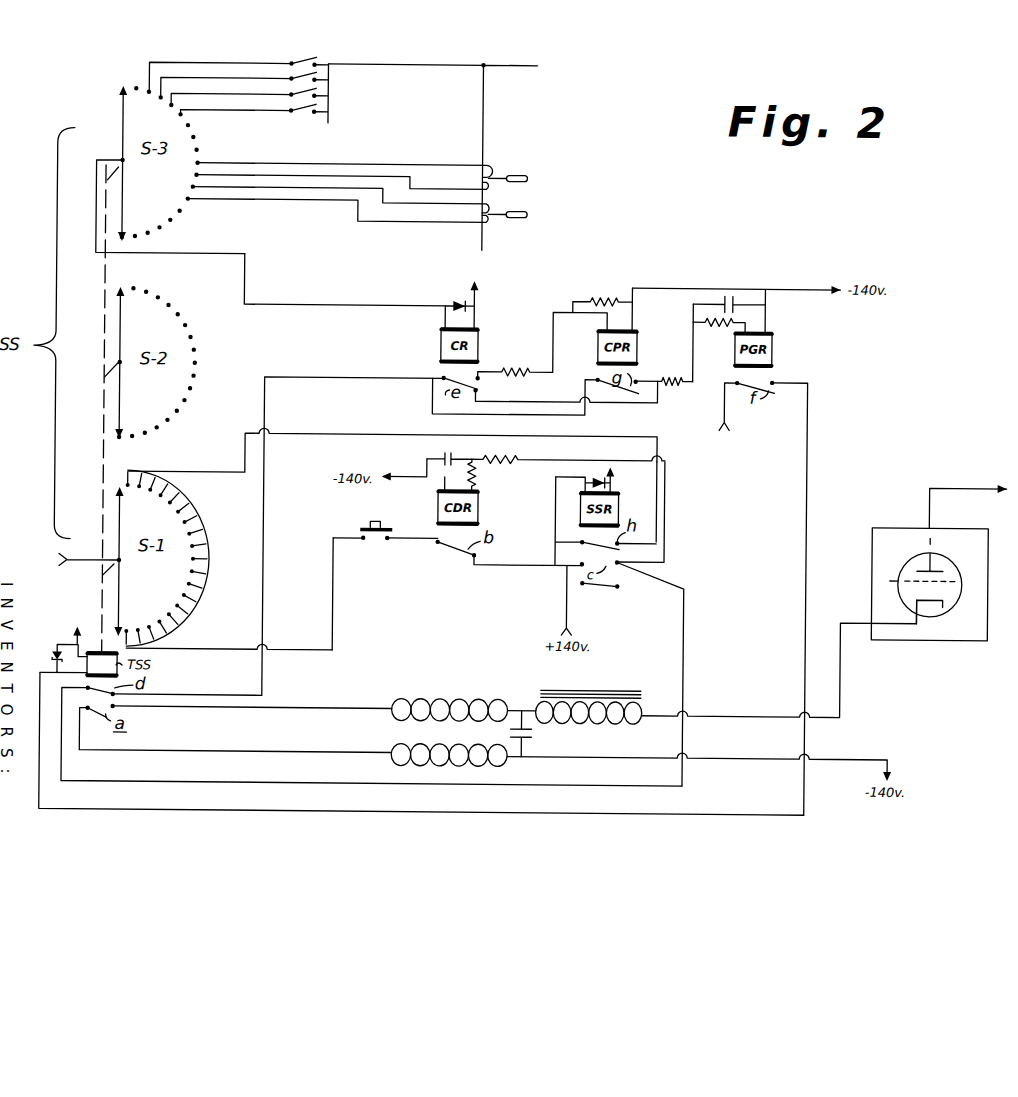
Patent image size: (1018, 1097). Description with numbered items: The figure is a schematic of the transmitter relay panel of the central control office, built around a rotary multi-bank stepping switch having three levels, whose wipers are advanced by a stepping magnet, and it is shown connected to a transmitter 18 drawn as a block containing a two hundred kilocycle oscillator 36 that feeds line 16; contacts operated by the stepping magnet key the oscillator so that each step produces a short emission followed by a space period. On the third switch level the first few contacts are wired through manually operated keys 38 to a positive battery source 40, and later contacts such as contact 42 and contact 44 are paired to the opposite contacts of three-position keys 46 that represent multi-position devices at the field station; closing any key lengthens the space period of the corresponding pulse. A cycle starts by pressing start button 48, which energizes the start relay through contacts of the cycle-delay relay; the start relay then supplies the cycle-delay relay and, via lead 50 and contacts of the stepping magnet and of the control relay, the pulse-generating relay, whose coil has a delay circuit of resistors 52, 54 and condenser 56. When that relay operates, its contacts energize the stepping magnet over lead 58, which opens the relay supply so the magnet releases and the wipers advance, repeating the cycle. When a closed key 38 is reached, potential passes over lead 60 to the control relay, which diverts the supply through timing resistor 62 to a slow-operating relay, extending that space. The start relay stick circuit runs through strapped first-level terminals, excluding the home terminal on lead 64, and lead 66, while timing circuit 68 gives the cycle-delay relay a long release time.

The line 16 is at (949, 490).
The transmitter 18 is at (913, 524).
The oscillator 36 is at (956, 564).
The keys 38 is at (296, 60).
The source of potential 40 is at (534, 65).
The contact 42 is at (195, 165).
The contact 44 is at (192, 178).
The three-position keys 46 is at (525, 212).
The start button 48 is at (370, 524).
The lead 50 is at (687, 631).
The resistor 52 is at (671, 379).
The resistor 54 is at (719, 327).
The condenser 56 is at (733, 296).
The lead 58 is at (808, 454).
The lead 60 is at (309, 305).
The timing resistor 62 is at (532, 365).
The lead 64 is at (219, 650).
The lead 66 is at (356, 430).
The timing circuit 68 is at (436, 463).